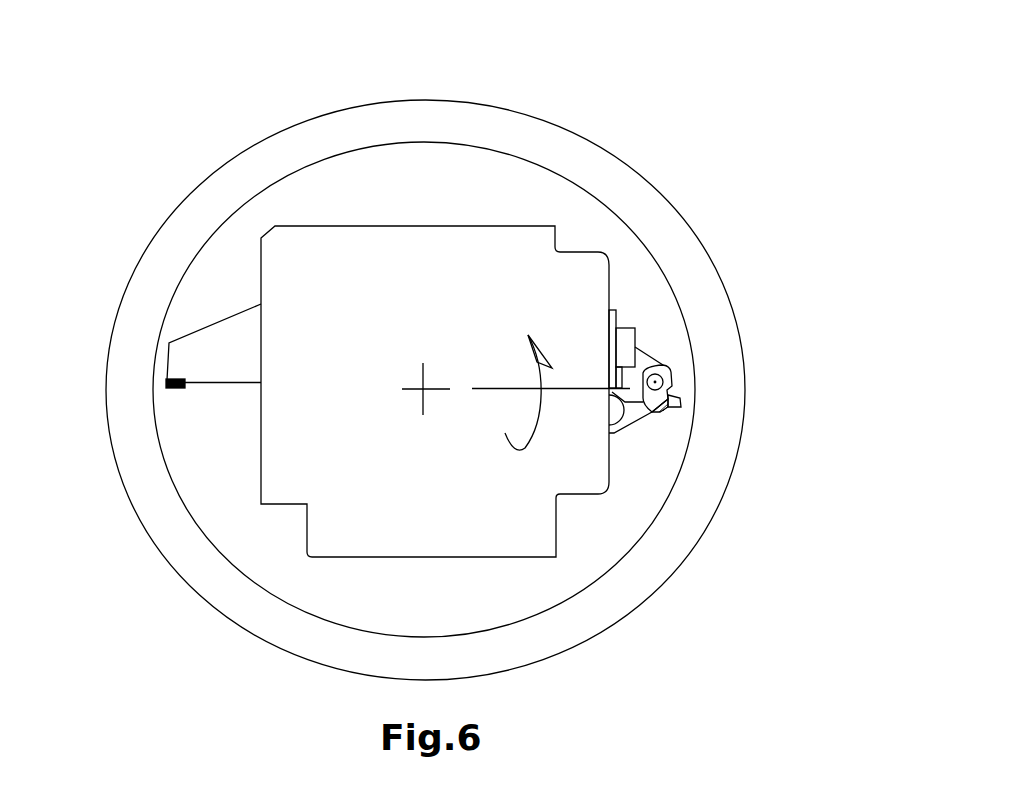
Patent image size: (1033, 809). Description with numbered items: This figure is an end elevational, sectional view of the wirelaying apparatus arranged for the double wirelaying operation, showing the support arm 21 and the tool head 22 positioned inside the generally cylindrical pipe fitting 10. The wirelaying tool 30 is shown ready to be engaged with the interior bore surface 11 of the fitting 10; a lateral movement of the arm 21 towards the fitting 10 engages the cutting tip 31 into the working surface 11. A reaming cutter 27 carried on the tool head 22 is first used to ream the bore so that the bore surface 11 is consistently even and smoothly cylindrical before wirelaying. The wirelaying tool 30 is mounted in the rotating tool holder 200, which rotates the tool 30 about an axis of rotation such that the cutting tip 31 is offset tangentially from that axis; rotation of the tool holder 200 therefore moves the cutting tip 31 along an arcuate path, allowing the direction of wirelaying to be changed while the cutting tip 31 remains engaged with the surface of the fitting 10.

The pipe fitting 10 is at (717, 509).
The interior bore surface 11 is at (691, 437).
The support arm 21 is at (522, 245).
The tool head 22 is at (612, 268).
The reaming cutter 27 is at (180, 386).
The wirelaying tool 30 is at (673, 380).
The cutting tip 31 is at (680, 399).
The rotating tool holder 200 is at (650, 356).